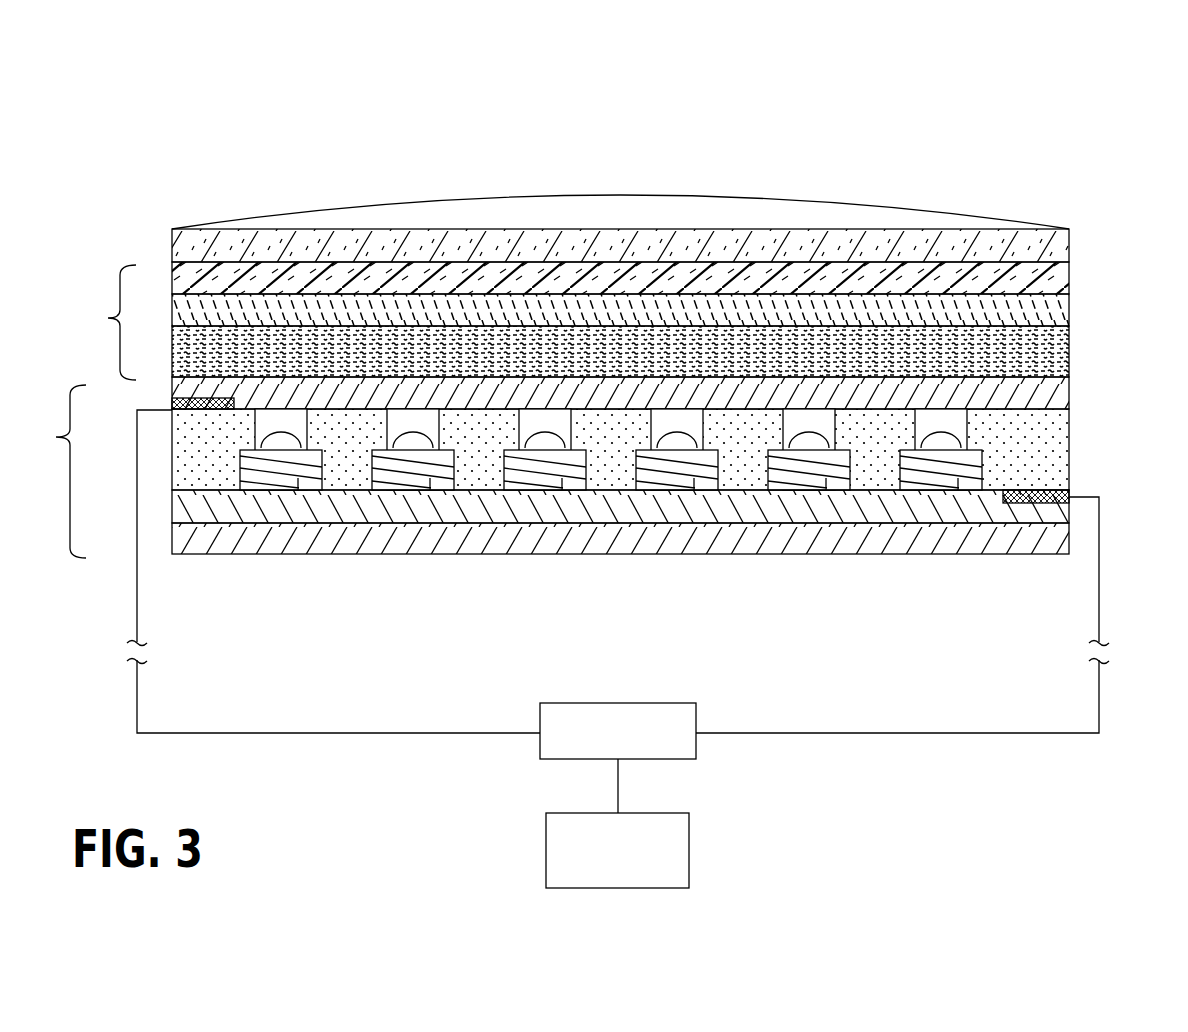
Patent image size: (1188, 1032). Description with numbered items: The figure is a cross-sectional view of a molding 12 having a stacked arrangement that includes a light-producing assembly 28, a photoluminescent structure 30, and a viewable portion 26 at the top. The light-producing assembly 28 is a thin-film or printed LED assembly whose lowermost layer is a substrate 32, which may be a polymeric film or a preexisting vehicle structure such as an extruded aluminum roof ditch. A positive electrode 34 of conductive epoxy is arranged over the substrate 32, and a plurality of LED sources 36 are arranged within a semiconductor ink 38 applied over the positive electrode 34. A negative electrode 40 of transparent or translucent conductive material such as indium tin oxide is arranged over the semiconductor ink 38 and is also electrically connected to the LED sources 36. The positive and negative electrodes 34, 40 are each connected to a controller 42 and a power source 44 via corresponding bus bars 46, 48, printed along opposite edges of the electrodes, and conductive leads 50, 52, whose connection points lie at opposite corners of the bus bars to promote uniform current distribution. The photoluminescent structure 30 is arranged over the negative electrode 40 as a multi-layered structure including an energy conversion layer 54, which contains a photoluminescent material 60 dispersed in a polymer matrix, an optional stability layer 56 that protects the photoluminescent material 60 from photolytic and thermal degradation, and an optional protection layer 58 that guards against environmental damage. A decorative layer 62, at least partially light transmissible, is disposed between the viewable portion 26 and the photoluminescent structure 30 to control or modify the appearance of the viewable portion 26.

The molding 12 is at (903, 122).
The viewable portion 26 is at (945, 211).
The light-producing assembly 28 is at (52, 471).
The photoluminescent structure 30 is at (103, 322).
The substrate 32 is at (1069, 540).
The positive electrode 34 is at (1069, 512).
The LED sources 36 is at (302, 478).
The semiconductor ink 38 is at (1069, 440).
The negative electrode 40 is at (1069, 393).
The controller 42 is at (696, 749).
The power source 44 is at (689, 833).
The bus bar 46 is at (1069, 491).
The bus bar 48 is at (172, 403).
The conductive lead 50 is at (1100, 607).
The conductive lead 52 is at (137, 603).
The energy conversion layer 54 is at (1069, 343).
The stability layer 56 is at (1069, 313).
The protection layer 58 is at (1069, 278).
The photoluminescent material 60 is at (1069, 362).
The decorative layer 62 is at (1069, 246).